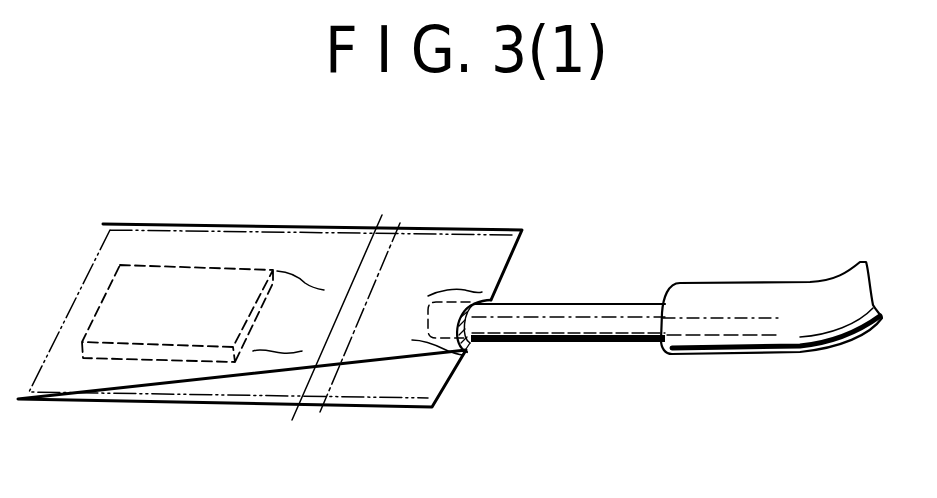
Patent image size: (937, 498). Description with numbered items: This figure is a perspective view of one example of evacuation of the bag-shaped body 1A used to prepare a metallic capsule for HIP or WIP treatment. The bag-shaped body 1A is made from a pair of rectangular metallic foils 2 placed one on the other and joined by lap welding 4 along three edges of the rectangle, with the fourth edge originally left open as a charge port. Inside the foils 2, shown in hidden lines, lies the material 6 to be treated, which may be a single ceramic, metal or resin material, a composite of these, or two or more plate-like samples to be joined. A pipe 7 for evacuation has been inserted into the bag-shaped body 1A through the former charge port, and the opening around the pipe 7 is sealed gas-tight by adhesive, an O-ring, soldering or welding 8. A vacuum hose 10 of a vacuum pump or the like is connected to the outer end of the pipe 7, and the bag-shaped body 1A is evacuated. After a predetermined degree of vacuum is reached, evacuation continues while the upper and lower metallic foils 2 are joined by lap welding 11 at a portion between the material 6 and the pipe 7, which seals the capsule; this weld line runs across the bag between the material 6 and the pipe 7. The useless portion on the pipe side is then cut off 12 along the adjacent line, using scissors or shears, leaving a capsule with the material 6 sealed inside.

The bag-shaped body 1A is at (282, 242).
The metallic foil 2 is at (223, 383).
The lap welding 4 is at (130, 398).
The material to be treated 6 is at (103, 300).
The pipe for evacuation 7 is at (617, 304).
The welding 8 is at (493, 297).
The vacuum hose 10 is at (735, 290).
The lap welding 11 is at (362, 258).
The cut off 12 is at (387, 258).